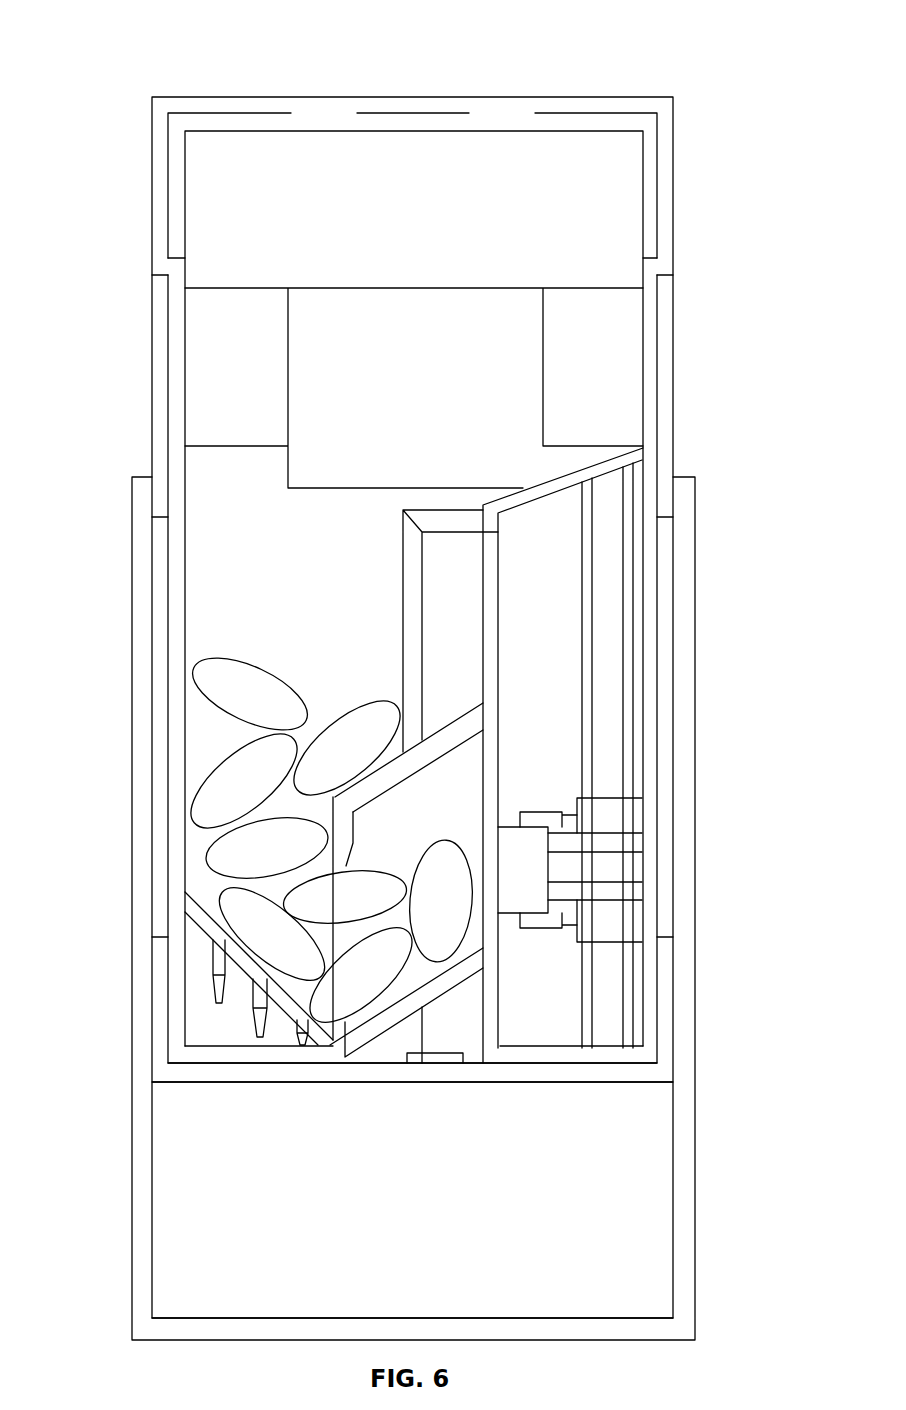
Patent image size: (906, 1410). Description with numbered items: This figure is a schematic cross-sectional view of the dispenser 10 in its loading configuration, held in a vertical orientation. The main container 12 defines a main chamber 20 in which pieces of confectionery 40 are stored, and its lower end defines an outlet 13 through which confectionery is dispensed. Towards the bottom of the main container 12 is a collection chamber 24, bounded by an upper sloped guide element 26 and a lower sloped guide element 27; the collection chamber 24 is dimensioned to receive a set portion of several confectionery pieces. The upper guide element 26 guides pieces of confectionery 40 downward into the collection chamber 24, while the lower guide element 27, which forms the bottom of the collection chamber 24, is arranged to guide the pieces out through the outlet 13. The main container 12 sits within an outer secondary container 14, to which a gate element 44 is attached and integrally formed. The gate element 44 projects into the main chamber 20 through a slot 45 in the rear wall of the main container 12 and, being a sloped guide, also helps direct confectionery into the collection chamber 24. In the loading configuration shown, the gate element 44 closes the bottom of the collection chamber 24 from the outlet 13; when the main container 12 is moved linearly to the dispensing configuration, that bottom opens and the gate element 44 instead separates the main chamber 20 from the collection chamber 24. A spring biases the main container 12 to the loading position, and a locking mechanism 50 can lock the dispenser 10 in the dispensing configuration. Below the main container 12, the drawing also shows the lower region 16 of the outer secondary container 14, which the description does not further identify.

The dispenser 10 is at (688, 55).
The main container 12 is at (675, 165).
The outer secondary container 14 is at (696, 517).
The main chamber 20 is at (215, 490).
The outlet 13 is at (268, 1055).
The lower compartment 16 is at (187, 1263).
The upper sloped guide element 26 is at (455, 737).
The collection chamber 24 is at (418, 962).
The lower sloped guide element 27 is at (393, 1020).
The gate element 44 is at (240, 955).
The pieces of confectionery 40 is at (215, 677).
The slot 45 is at (200, 748).
The locking mechanism 50 is at (618, 872).